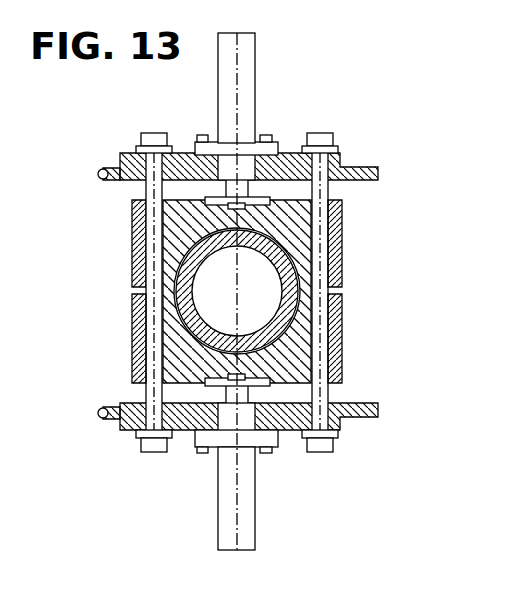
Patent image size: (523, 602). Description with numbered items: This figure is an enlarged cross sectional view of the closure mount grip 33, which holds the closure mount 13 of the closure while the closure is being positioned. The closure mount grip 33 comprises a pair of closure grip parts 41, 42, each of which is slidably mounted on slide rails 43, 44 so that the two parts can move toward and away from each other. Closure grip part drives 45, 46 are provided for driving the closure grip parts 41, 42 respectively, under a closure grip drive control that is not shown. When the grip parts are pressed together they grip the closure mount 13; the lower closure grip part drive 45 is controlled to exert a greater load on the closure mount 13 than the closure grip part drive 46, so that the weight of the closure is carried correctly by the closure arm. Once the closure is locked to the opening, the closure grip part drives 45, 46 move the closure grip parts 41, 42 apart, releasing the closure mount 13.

The closure mount 13 is at (213, 345).
The closure mount grip 33 is at (124, 264).
The closure grip part 41 is at (341, 340).
The closure grip part 42 is at (341, 267).
The slide rail 43 is at (140, 345).
The slide rail 44 is at (322, 375).
The lower closure grip part drive 45 is at (243, 486).
The closure grip part drive 46 is at (243, 78).